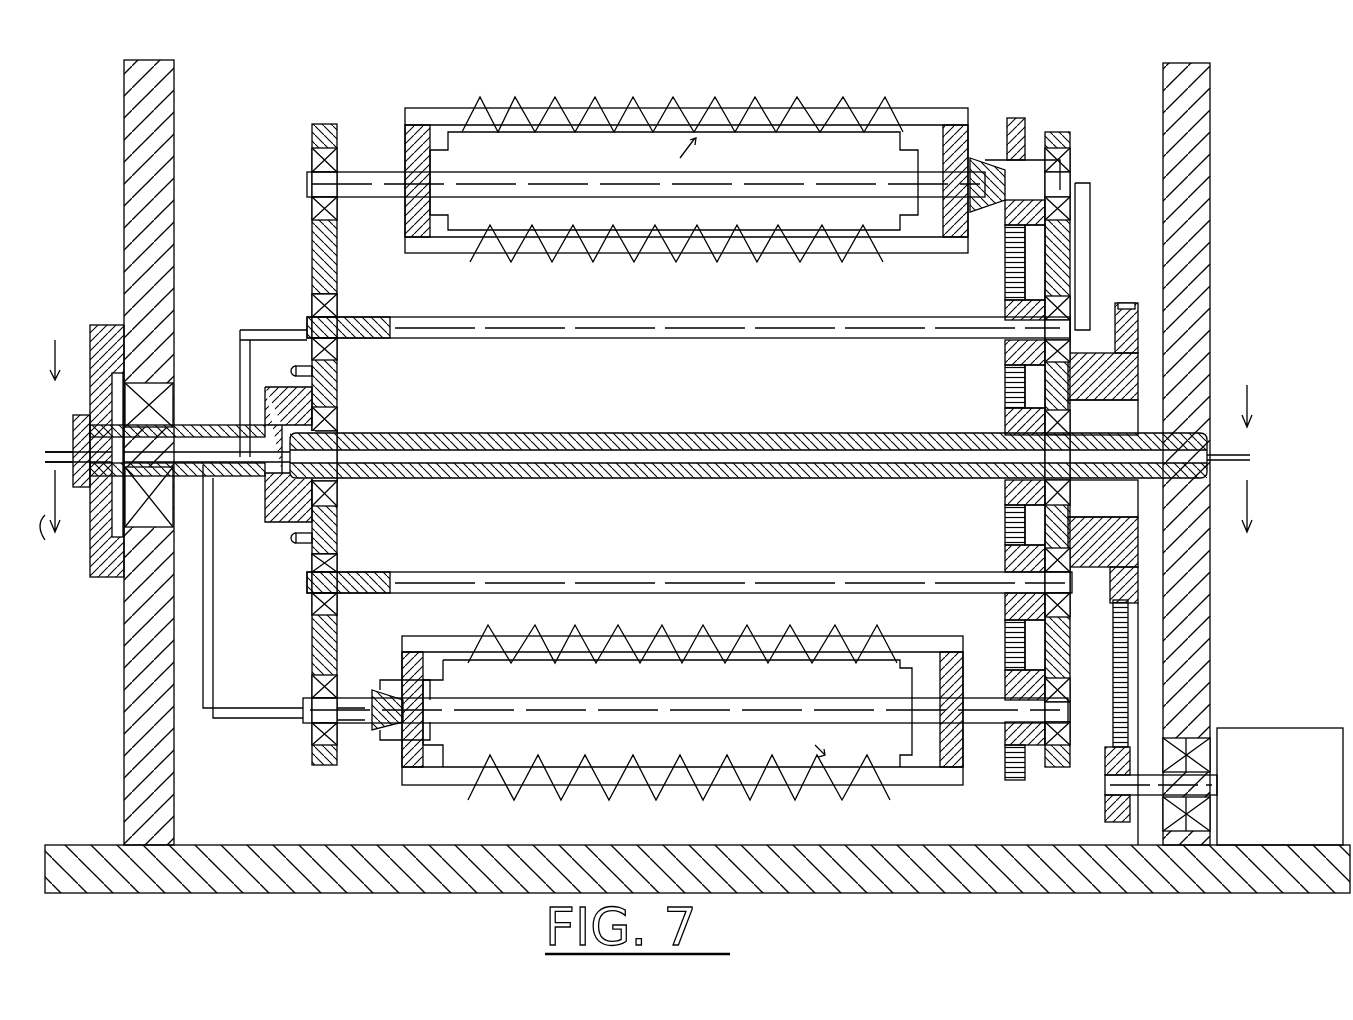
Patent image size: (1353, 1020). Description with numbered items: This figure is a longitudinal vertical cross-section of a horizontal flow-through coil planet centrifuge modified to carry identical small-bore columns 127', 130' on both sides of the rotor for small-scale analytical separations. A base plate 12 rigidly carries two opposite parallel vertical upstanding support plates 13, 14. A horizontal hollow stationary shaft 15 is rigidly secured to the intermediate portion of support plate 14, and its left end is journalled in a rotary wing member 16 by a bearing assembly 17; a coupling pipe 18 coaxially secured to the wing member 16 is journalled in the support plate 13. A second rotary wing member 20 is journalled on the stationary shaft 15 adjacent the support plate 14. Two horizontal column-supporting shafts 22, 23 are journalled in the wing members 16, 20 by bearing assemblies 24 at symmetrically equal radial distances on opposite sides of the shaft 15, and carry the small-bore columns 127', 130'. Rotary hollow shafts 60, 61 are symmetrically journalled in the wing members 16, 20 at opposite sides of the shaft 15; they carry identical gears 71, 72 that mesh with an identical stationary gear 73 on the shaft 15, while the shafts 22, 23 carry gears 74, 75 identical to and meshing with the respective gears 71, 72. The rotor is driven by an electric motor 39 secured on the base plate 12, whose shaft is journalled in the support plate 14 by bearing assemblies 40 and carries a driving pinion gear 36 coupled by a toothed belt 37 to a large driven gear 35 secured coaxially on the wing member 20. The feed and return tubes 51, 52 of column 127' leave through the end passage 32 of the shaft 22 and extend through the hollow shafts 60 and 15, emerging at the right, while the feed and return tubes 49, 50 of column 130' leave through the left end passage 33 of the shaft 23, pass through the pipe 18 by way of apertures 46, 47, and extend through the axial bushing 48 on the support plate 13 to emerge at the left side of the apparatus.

The base plate 12 is at (272, 852).
The support plate 13 is at (160, 786).
The support plate 14 is at (1198, 650).
The hollow stationary shaft 15 is at (585, 435).
The rotary wing member 16 is at (311, 642).
The bearing assembly 17 is at (332, 420).
The coupling pipe 18 is at (240, 480).
The rotary wing member 20 is at (1062, 138).
The column-supporting shaft 22 is at (690, 186).
The column-supporting shaft 23 is at (608, 712).
The bearing assembly 24 is at (338, 150).
The end-opening tube-conveying passage 32 is at (995, 205).
The end-opening tube-conveying passage 33 is at (372, 735).
The large driven gear 35 is at (1128, 300).
The driving pinion gear 36 is at (1104, 806).
The toothed belt 37 is at (1112, 715).
The electric motor 39 is at (1262, 730).
The bearing assembly 40 is at (1190, 740).
The aperture 46 is at (228, 425).
The aperture 47 is at (198, 485).
The axial bushing 48 is at (178, 425).
The feed tube 49 is at (57, 338).
The return tube 50 is at (41, 530).
The feed tube 51 is at (1247, 383).
The return tube 52 is at (1256, 522).
The rotary hollow shaft 60 is at (450, 335).
The rotary hollow shaft 61 is at (500, 572).
The gear 71 is at (1005, 360).
The gear 72 is at (1005, 555).
The stationary gear 73 is at (1005, 492).
The gear 74 is at (1022, 118).
The gear 75 is at (1025, 775).
The small-bore column 127' is at (686, 163).
The small-bore column 130' is at (682, 728).